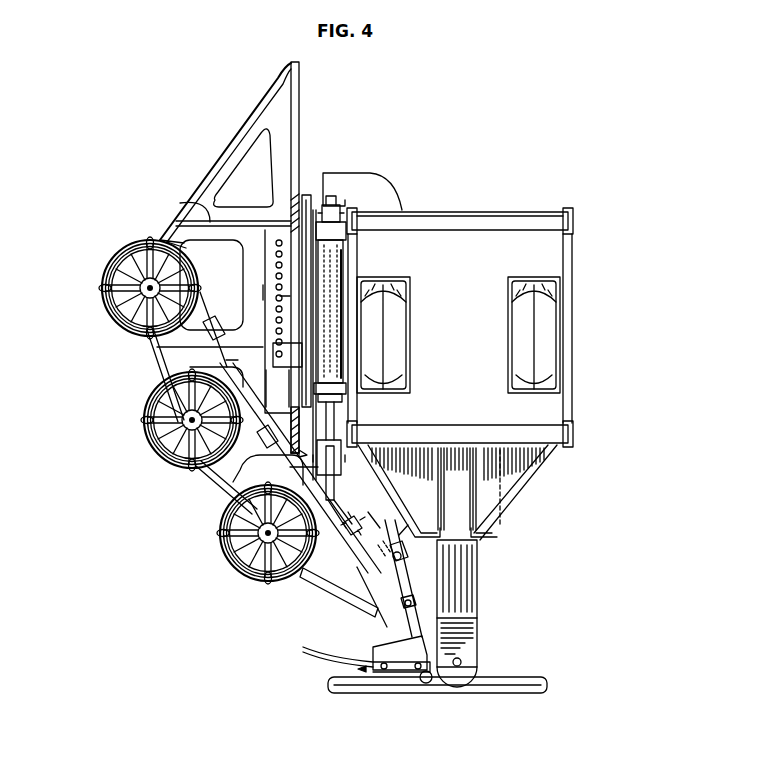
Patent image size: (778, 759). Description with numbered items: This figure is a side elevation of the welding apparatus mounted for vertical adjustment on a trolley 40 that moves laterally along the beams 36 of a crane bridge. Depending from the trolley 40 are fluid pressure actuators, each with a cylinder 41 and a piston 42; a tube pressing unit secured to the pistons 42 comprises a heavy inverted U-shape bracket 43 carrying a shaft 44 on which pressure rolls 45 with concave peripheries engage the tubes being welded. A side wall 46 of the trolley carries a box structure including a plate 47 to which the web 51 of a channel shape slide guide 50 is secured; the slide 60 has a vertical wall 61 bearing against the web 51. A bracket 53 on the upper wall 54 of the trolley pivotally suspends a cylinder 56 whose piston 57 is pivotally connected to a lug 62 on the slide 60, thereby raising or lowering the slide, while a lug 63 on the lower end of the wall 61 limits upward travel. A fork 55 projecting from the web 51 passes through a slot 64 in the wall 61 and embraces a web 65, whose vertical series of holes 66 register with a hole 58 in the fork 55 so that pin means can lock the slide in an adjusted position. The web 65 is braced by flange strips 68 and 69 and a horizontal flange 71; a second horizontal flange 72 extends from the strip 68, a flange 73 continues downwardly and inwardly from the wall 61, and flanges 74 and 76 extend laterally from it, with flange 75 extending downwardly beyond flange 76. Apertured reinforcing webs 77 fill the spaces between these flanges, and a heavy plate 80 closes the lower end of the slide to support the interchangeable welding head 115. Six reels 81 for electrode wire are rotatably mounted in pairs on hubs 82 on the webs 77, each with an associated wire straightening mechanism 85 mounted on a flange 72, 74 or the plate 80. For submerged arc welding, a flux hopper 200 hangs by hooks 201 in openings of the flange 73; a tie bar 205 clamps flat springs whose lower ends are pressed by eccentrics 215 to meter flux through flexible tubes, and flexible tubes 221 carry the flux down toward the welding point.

The beams 36 is at (528, 302).
The trolley 40 is at (460, 446).
The cylinder 41 is at (502, 528).
The piston 42 is at (480, 628).
The inverted U-shape bracket 43 is at (470, 632).
The shaft 44 is at (462, 662).
The pressure rolls 45 is at (459, 675).
The side wall 46 is at (345, 299).
The plate 47 is at (308, 248).
The slide guide 50 is at (307, 194).
The web 51 is at (290, 367).
The bracket 53 is at (355, 182).
The upper wall 54 is at (425, 220).
The fork 55 is at (272, 352).
The cylinder 56 is at (330, 277).
The piston 57 is at (330, 415).
The hole 58 is at (287, 345).
The slide 60 is at (233, 336).
The vertical wall 61 is at (300, 92).
The lug 62 is at (331, 468).
The lug 63 is at (301, 446).
The slot 64 is at (282, 300).
The web 65 is at (263, 233).
The holes 66 is at (276, 264).
The flange strip 68 is at (263, 292).
The flange strip 69 is at (278, 407).
The horizontal flange 71 is at (200, 166).
The second horizontal flange 72 is at (157, 368).
The flange 73 is at (342, 522).
The flange 74 is at (210, 473).
The flange 75 is at (220, 137).
The flange 76 is at (323, 594).
The reinforcing webs 77 is at (275, 98).
The plate 80 is at (352, 606).
The reels 81 is at (112, 256).
The hubs or stub shafts 82 is at (115, 302).
The wire straightening mechanisms 85 is at (370, 566).
The welding head 115 is at (350, 640).
The flux hopper 200 is at (373, 508).
The hooks 201 is at (361, 527).
The tie bar 205 is at (403, 540).
The eccentric 215 is at (404, 552).
The flexible tubes 221 is at (404, 596).